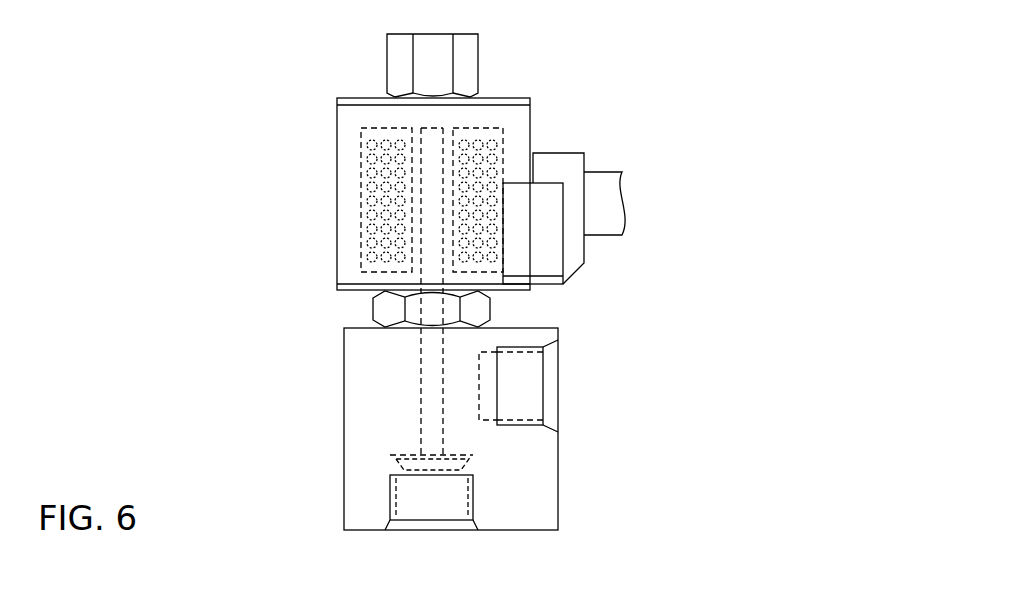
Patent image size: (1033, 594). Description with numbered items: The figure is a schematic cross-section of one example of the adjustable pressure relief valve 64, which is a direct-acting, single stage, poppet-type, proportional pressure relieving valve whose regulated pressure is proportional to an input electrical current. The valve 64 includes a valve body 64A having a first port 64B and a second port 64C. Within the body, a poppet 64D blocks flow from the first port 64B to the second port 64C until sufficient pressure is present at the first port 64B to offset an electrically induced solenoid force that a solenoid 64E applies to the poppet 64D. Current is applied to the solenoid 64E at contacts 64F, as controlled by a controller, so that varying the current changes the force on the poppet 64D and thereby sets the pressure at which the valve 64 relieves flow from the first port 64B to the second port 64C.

The adjustable pressure relief valve 64 is at (570, 52).
The valve body 64A is at (344, 392).
The first port 64B is at (450, 530).
The second port 64C is at (558, 400).
The poppet 64D is at (457, 455).
The solenoid 64E is at (503, 129).
The contacts 64F is at (642, 173).